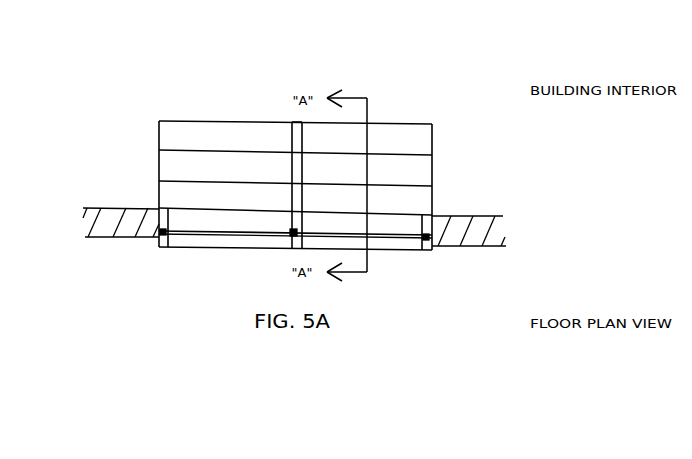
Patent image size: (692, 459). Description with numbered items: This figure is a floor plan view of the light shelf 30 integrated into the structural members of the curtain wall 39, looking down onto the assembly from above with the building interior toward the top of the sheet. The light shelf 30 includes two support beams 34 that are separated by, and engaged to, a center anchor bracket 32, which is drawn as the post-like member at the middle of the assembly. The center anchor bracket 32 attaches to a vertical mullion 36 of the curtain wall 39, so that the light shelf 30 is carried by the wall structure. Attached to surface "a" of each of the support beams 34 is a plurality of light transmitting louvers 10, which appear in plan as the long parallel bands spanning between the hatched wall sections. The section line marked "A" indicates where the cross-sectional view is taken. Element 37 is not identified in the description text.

The light transmitting louver 10 is at (195, 138).
The light shelf 30 is at (433, 123).
The center anchor bracket 32 is at (300, 210).
The support beam 34 is at (299, 121).
The vertical mullion 36 is at (297, 224).
The track 37 is at (197, 222).
The curtain wall 39 is at (412, 252).